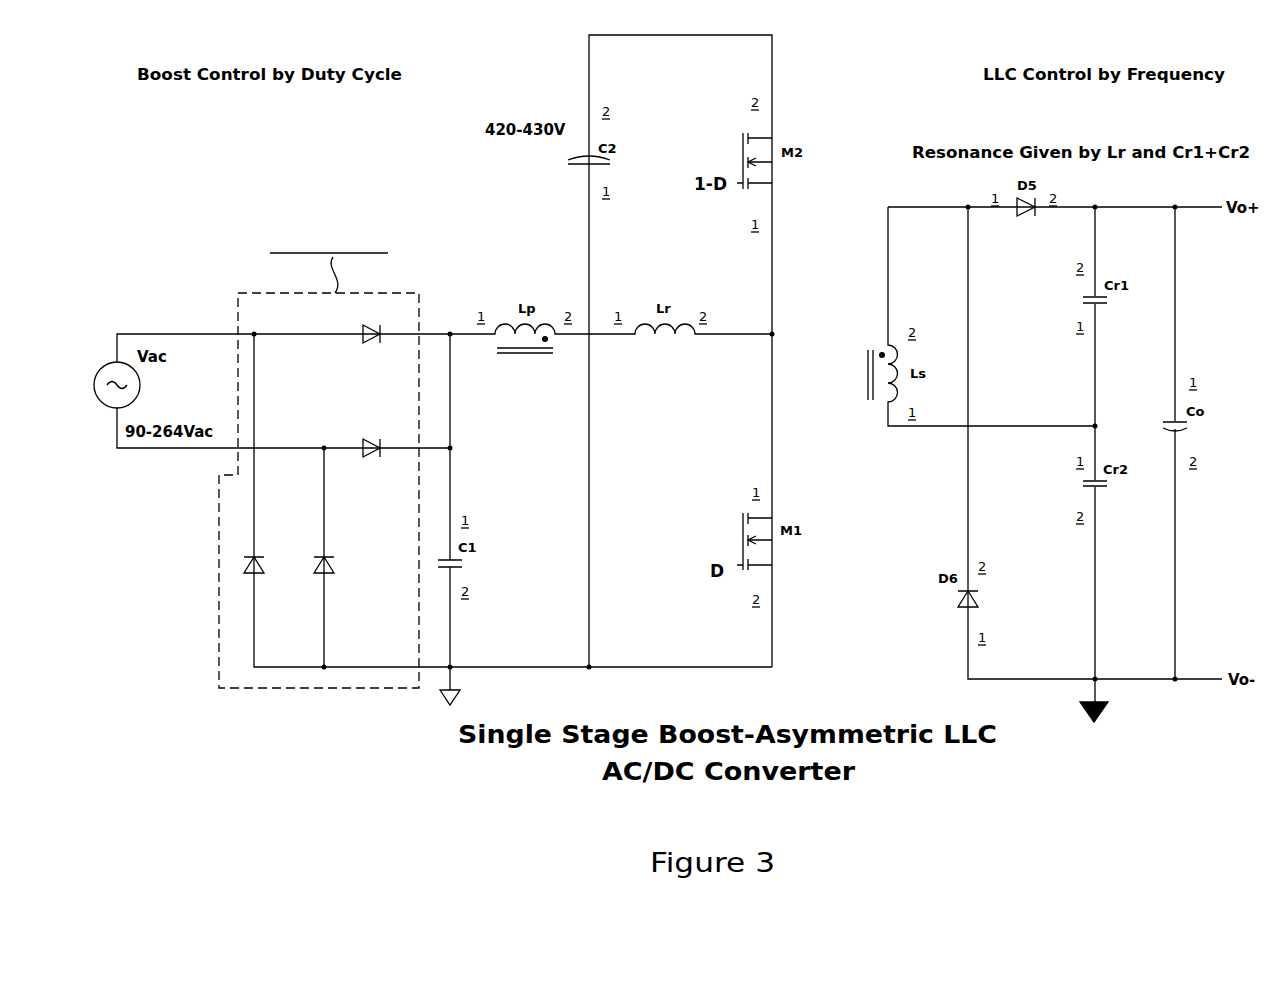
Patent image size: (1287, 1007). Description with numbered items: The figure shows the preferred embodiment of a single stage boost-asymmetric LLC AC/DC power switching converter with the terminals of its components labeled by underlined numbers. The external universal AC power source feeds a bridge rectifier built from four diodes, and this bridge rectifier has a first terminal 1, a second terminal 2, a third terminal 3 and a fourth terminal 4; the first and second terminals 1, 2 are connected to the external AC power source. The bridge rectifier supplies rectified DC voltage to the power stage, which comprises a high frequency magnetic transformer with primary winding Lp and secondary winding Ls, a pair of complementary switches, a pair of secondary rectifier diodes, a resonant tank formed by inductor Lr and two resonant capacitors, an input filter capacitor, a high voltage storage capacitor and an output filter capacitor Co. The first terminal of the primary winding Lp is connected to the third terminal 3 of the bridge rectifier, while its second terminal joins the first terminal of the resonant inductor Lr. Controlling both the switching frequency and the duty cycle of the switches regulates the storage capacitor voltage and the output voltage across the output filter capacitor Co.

The first terminal 1 is at (258, 323).
The second terminal 2 is at (328, 436).
The third terminal 3 is at (411, 323).
The fourth terminal 4 is at (344, 661).